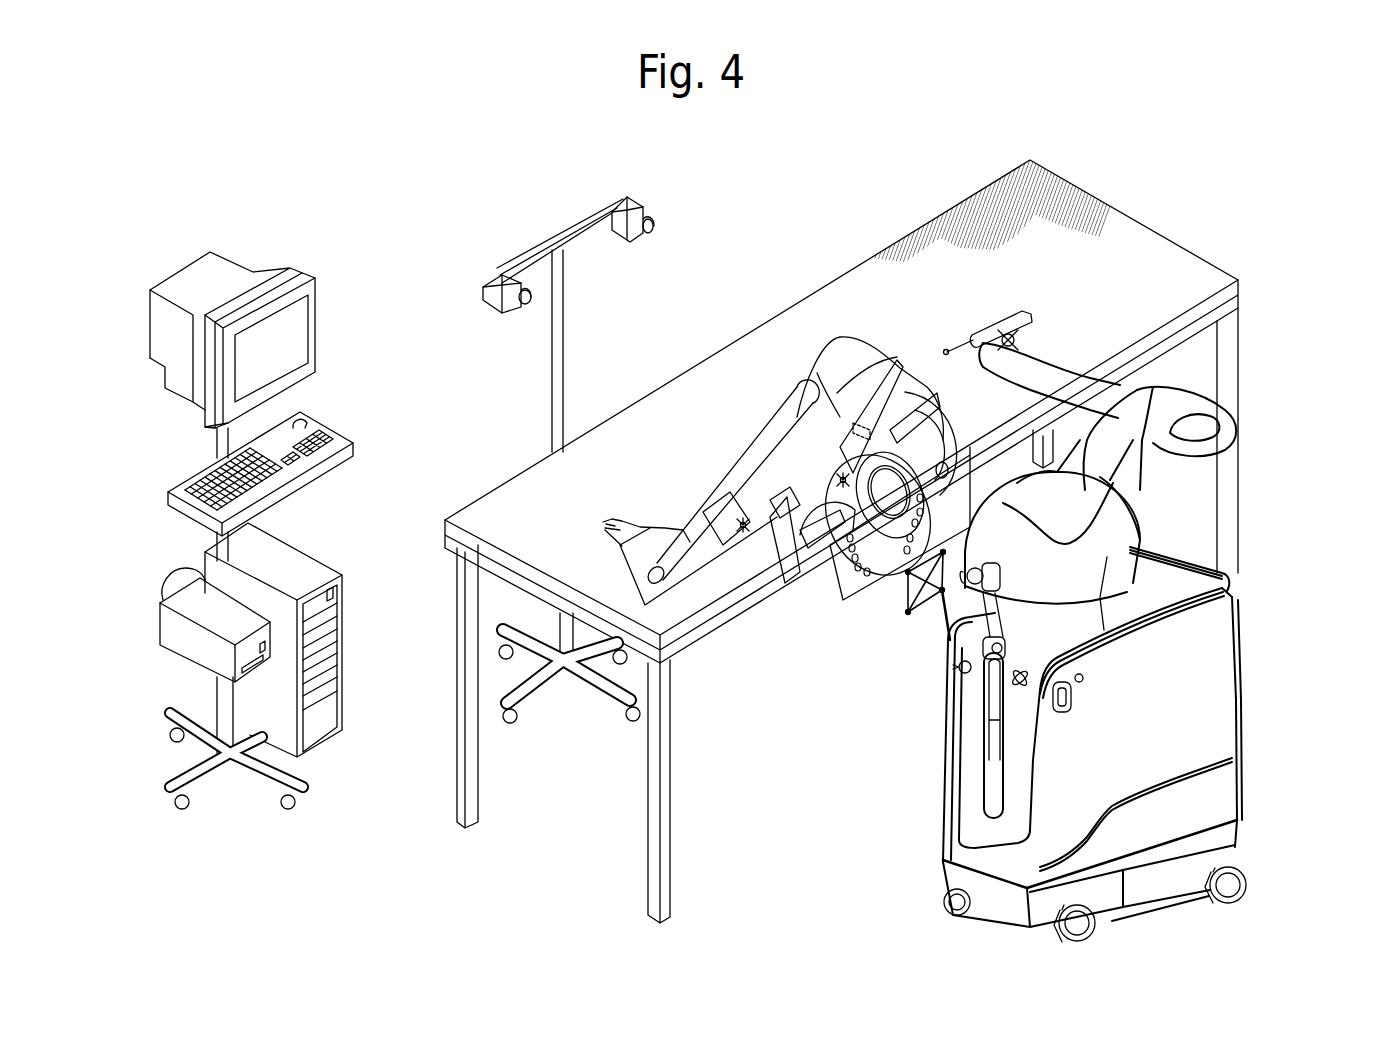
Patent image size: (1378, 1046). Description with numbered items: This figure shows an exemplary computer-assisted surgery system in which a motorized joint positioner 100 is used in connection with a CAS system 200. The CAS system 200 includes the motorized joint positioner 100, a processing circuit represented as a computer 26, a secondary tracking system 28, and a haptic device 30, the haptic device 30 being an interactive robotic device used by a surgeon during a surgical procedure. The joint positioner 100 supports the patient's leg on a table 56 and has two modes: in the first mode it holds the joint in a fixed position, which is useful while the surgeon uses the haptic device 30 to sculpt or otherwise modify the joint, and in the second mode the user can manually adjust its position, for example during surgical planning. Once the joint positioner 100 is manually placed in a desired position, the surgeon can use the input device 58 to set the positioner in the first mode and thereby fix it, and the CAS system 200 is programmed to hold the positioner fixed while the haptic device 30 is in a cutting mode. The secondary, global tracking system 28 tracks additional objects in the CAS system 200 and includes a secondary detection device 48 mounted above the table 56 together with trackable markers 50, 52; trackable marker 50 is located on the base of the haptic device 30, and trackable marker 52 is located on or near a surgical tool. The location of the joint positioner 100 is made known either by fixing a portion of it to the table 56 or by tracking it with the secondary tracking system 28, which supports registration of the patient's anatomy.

The CAS system 200 is at (261, 199).
The input device 58 is at (330, 428).
The computer 26 is at (323, 559).
The secondary tracking system 28 is at (563, 199).
The secondary detection device 48 is at (530, 258).
The table 56 is at (1166, 255).
The trackable marker 52 is at (1038, 350).
The trackable marker 50 is at (948, 607).
The haptic device 30 is at (1294, 388).
The motorized joint positioner 100 is at (772, 624).